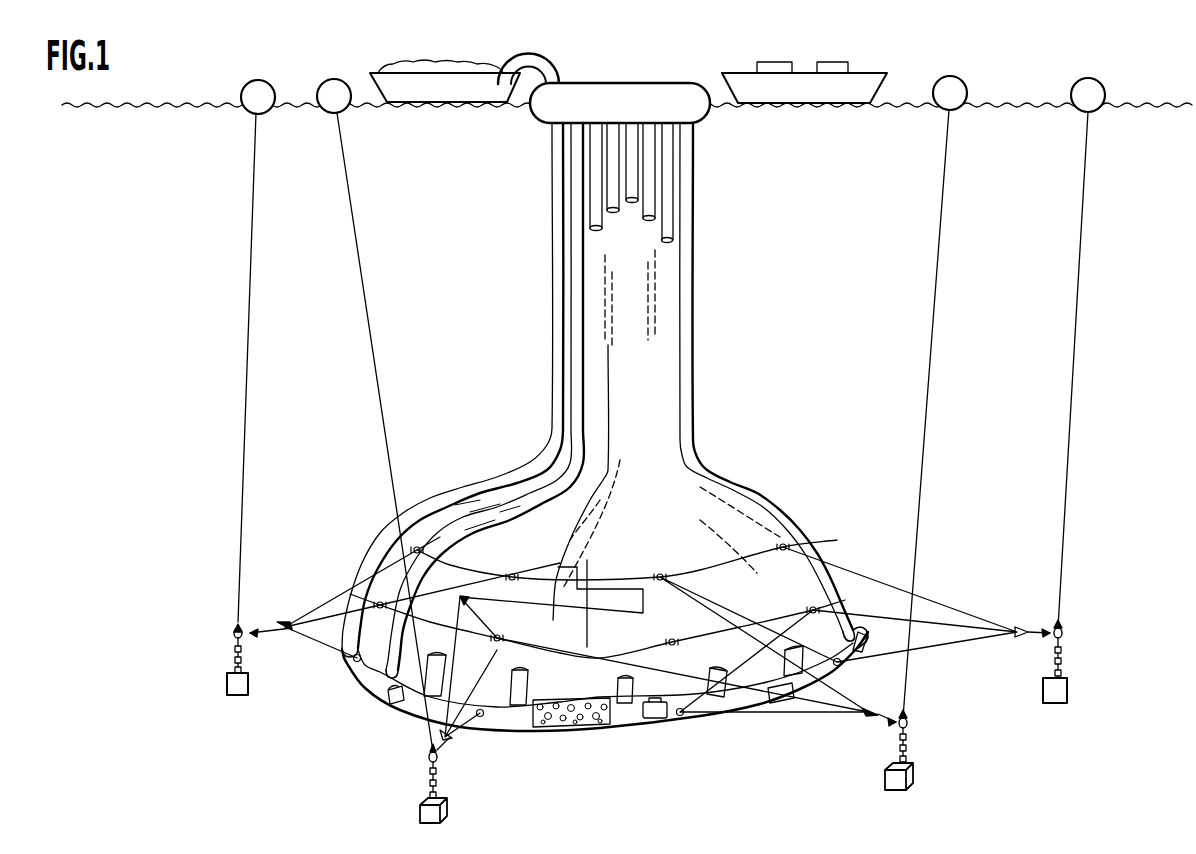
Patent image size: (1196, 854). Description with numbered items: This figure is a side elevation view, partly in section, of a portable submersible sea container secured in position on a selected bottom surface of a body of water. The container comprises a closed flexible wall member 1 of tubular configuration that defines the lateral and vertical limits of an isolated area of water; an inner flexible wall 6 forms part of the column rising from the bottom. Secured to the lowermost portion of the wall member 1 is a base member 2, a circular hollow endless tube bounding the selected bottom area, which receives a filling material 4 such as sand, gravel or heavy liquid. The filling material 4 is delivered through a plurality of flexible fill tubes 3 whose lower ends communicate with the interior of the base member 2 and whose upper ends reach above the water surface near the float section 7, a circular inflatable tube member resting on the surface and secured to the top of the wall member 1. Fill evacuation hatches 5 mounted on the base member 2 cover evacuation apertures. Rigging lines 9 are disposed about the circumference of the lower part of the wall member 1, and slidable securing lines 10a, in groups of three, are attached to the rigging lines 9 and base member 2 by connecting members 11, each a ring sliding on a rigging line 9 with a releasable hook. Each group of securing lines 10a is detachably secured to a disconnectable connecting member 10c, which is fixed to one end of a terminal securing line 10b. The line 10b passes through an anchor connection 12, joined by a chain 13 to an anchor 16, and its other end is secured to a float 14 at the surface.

The flexible wall member 1 is at (650, 484).
The base member 2 is at (630, 718).
The fill tubes 3 is at (468, 488).
The filling material 4 is at (437, 71).
The fill evacuation hatches 5 is at (393, 698).
The inner flexible wall 6 is at (668, 337).
The float section 7 is at (635, 95).
The rigging lines 9 is at (700, 577).
The securing lines 10a is at (326, 588).
The terminal securing line 10b is at (247, 406).
The disconnectable connecting member 10c is at (284, 624).
The connecting member 11 is at (420, 549).
The anchor connection 12 is at (242, 637).
The chain 13 is at (228, 656).
The float 14 is at (256, 90).
The anchor 16 is at (246, 690).